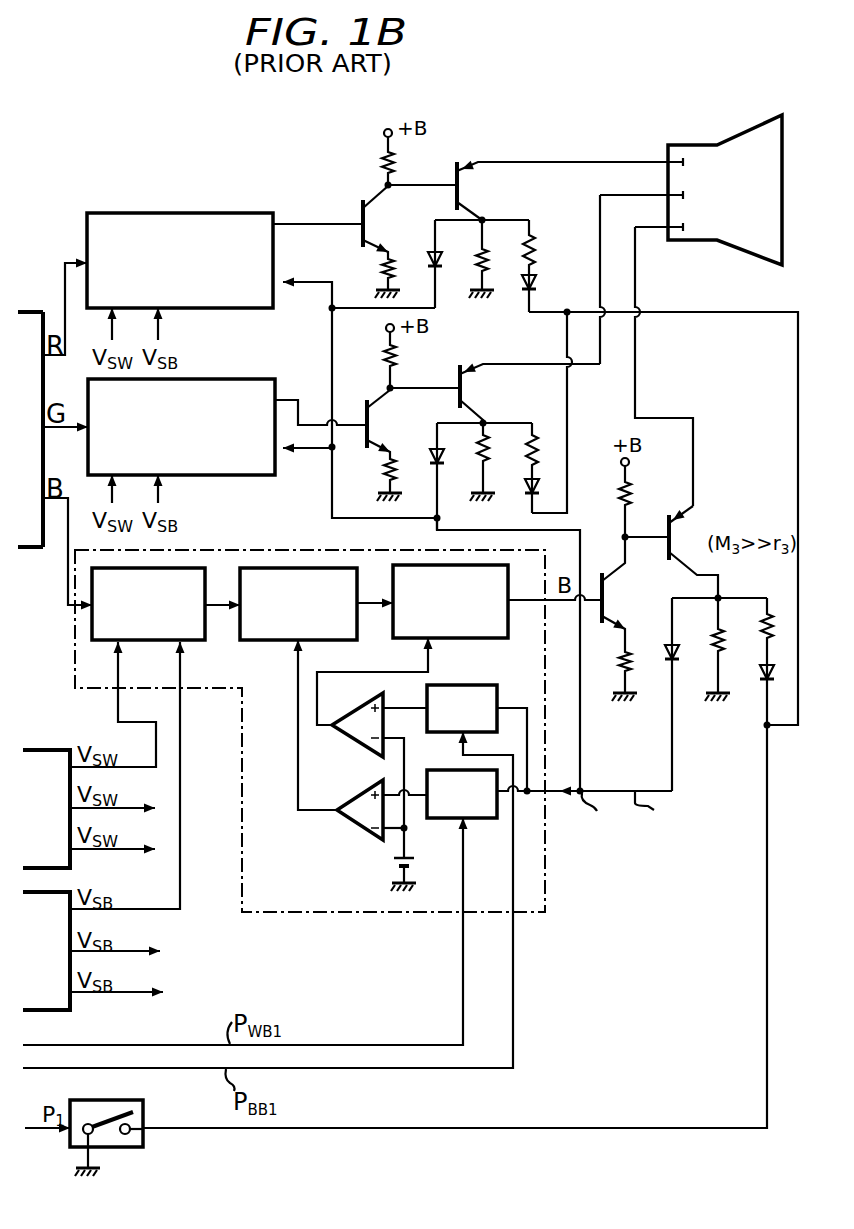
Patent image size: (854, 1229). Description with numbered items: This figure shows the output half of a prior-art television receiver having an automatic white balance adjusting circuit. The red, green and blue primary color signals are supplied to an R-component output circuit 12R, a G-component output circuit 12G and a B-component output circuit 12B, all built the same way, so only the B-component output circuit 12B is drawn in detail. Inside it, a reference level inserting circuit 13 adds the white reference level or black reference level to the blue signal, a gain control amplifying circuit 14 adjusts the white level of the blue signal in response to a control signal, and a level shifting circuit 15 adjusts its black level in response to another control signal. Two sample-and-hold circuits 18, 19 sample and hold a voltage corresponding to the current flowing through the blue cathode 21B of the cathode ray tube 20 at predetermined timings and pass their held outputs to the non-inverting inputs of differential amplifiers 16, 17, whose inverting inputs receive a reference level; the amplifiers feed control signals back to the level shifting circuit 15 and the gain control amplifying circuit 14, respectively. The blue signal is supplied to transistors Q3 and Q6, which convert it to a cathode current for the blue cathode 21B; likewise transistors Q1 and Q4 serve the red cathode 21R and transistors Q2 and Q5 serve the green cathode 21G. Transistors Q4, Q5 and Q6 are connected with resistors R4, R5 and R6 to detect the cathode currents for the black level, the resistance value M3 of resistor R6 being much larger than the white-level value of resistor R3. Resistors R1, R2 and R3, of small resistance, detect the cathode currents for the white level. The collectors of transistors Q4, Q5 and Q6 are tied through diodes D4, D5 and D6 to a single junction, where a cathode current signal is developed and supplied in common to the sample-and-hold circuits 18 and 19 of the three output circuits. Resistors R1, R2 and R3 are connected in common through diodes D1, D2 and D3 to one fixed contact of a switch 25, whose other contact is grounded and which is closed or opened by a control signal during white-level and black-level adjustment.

The R-component output circuit 12R is at (250, 213).
The G-component output circuit 12G is at (250, 379).
The B-component output circuit 12B is at (545, 897).
The reference level inserting circuit 13 is at (205, 642).
The gain control amplifying circuit 14 is at (337, 640).
The level shifting circuit 15 is at (508, 615).
The differential amplifier 16 is at (346, 749).
The differential amplifier 17 is at (353, 821).
The sample-and-hold circuit 18 is at (497, 692).
The sample-and-hold circuit 19 is at (483, 818).
The cathode ray tube 20 is at (706, 143).
The red cathode 21R is at (688, 162).
The green cathode 21G is at (688, 195).
The blue cathode 21B is at (688, 227).
The switch 25 is at (143, 1112).
The transistor Q1 is at (363, 212).
The transistor Q2 is at (367, 408).
The transistor Q3 is at (602, 576).
The transistor Q4 is at (457, 172).
The transistor Q5 is at (460, 406).
The transistor Q6 is at (669, 530).
The resistor R1 is at (535, 250).
The resistor R2 is at (538, 448).
The resistor R3 is at (773, 613).
The resistor R4 is at (488, 263).
The resistor R5 is at (503, 447).
The resistor R6 is at (724, 651).
The resistance value M3 is at (728, 649).
The diode D1 is at (536, 284).
The diode D2 is at (525, 488).
The diode D3 is at (774, 680).
The diode D4 is at (442, 264).
The diode D5 is at (444, 463).
The diode D6 is at (679, 656).